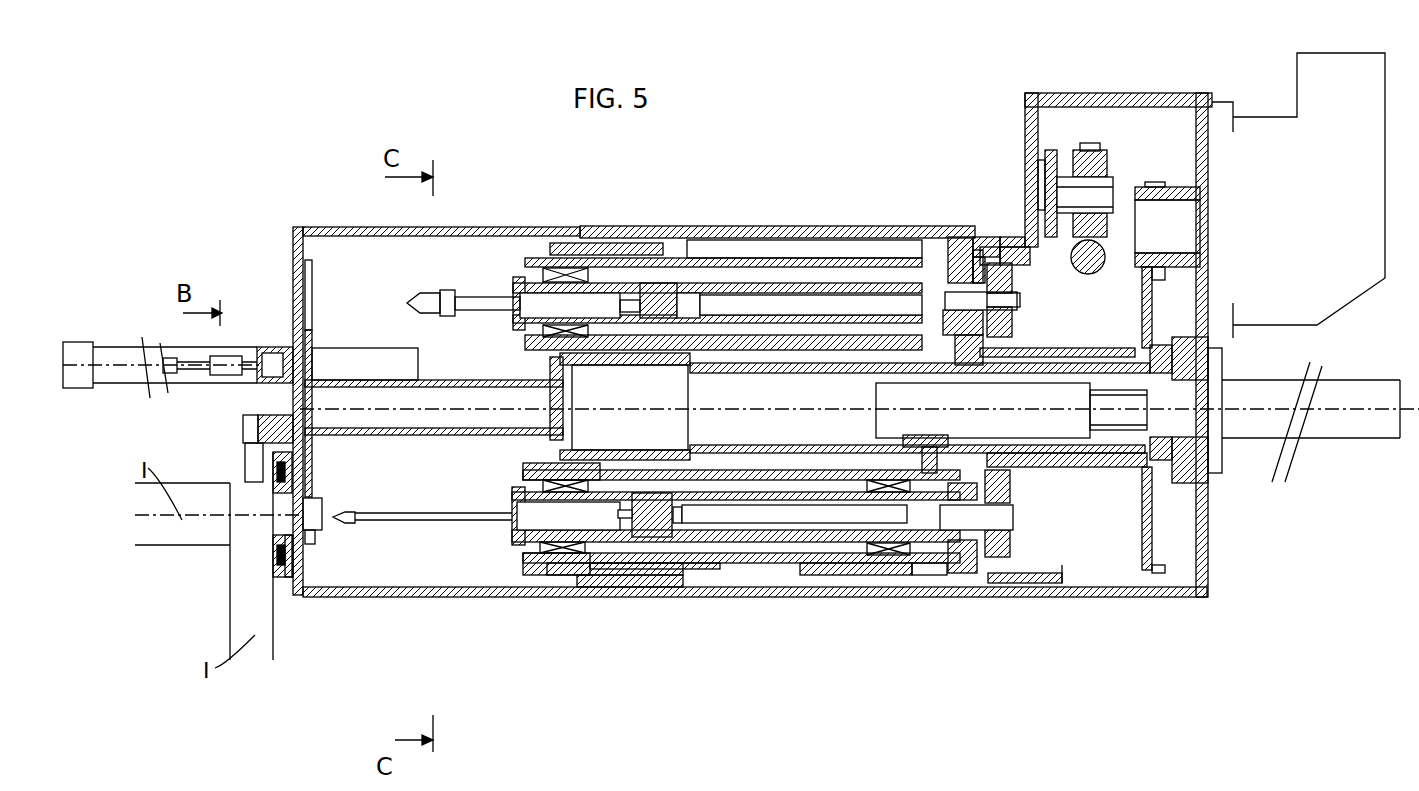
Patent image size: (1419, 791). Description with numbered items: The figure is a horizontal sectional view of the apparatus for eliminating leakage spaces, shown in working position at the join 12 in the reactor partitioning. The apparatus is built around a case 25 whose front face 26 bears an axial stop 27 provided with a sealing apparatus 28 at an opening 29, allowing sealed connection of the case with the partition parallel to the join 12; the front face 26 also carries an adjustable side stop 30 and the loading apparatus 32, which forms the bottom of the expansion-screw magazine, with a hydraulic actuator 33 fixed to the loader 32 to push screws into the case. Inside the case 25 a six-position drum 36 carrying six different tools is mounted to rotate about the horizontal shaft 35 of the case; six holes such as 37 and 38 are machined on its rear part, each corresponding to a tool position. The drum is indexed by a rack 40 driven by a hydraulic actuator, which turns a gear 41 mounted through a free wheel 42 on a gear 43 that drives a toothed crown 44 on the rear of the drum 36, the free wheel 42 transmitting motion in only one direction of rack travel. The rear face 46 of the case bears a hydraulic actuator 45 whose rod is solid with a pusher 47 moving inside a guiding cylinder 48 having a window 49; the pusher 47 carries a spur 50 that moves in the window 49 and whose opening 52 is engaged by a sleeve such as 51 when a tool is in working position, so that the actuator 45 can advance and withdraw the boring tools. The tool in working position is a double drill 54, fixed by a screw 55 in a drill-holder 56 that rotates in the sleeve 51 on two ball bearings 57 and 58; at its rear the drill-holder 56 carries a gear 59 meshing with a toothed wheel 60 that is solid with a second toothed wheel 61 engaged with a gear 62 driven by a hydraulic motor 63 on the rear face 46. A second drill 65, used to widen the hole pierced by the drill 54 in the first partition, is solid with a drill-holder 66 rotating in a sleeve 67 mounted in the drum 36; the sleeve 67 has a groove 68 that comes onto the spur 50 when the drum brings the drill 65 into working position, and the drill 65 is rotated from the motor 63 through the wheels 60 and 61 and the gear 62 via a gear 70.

The join 12 is at (243, 520).
The case 25 is at (468, 588).
The front face 26 is at (298, 242).
The axial stop 27 is at (290, 578).
The sealing apparatus 28 is at (272, 572).
The opening 29 is at (288, 525).
The adjustable side stop 30 is at (278, 418).
The apparatus for loading screws 32 is at (283, 346).
The hydraulic actuator 33 is at (116, 355).
The horizontal shaft 35 is at (442, 403).
The six-position drum 36 is at (720, 573).
The hole 37 is at (1000, 583).
The hole 38 is at (985, 242).
The rack 40 is at (1088, 275).
The gear 41 is at (1098, 160).
The free wheel 42 is at (1073, 163).
The gear 43 is at (1070, 168).
The toothed crown 44 is at (1023, 240).
The hydraulic actuator 45 is at (1338, 428).
The rear face 46 is at (1199, 530).
The pusher 47 is at (1075, 425).
The guiding cylinder 48 is at (1142, 455).
The window 49 is at (826, 432).
The spur 50 is at (945, 512).
The sleeve 51 is at (883, 562).
The opening 52 is at (927, 475).
The double drill 54 is at (410, 518).
The screw 55 is at (657, 517).
The drill-holder 56 is at (708, 545).
The ball bearing 57 is at (557, 545).
The ball bearing 58 is at (873, 545).
The gear 59 is at (995, 545).
The toothed wheel 60 is at (1033, 467).
The second toothed wheel 61 is at (1153, 574).
The gear 62 is at (1187, 190).
The hydraulic motor 63 is at (1300, 221).
The second drill 65 is at (490, 302).
The drill-holder 66 is at (657, 290).
The sleeve 67 is at (752, 260).
The groove 68 is at (930, 337).
The gear 70 is at (1013, 277).